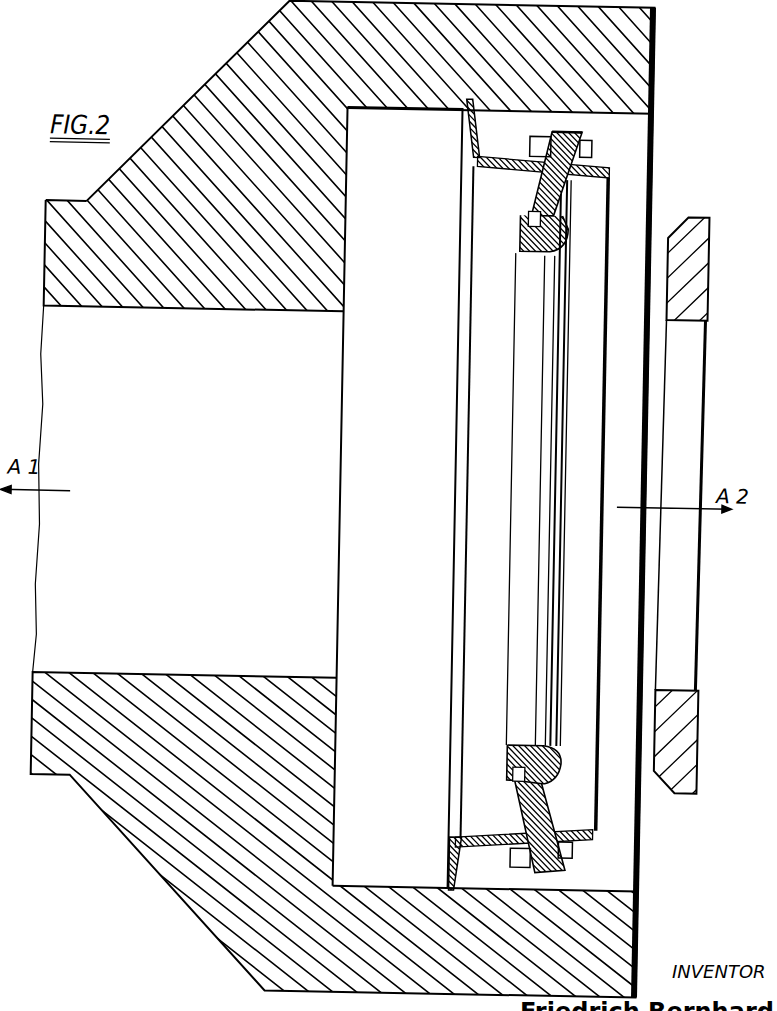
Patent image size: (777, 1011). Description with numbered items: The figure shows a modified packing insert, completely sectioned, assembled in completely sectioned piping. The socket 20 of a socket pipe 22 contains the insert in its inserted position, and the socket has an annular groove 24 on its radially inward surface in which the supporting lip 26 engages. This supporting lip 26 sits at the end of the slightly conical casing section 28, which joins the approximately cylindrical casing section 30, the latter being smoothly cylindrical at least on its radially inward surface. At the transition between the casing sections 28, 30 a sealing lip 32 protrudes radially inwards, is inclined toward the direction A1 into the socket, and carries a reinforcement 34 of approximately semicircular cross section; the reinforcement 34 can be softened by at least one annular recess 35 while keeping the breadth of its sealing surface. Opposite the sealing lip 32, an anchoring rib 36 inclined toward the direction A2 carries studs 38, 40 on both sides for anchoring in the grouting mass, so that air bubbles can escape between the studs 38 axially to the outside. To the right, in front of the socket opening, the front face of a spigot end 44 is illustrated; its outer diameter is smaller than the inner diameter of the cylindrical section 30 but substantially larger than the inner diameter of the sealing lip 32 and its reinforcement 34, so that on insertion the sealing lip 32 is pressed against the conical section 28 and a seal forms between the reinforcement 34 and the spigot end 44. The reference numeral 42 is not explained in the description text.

The socket 20 is at (644, 44).
The socket pipe 22 is at (206, 313).
The annular groove 24 is at (458, 105).
The supporting lip 26 is at (463, 138).
The slightly conical casing section 28 is at (513, 172).
The approximately cylindrical casing section 30 is at (559, 176).
The sealing lip 32 is at (528, 191).
The reinforcement 34 is at (563, 224).
The annular recess 35 is at (518, 224).
The anchoring rib 36 is at (568, 126).
The studs 38 is at (523, 140).
The studs 40 is at (581, 146).
The piston body 42 is at (343, 240).
The spigot end 44 is at (689, 195).